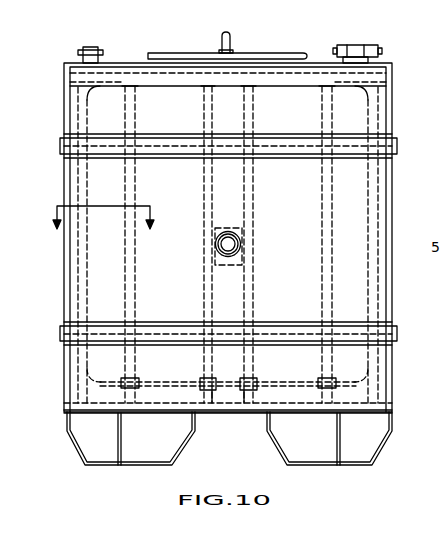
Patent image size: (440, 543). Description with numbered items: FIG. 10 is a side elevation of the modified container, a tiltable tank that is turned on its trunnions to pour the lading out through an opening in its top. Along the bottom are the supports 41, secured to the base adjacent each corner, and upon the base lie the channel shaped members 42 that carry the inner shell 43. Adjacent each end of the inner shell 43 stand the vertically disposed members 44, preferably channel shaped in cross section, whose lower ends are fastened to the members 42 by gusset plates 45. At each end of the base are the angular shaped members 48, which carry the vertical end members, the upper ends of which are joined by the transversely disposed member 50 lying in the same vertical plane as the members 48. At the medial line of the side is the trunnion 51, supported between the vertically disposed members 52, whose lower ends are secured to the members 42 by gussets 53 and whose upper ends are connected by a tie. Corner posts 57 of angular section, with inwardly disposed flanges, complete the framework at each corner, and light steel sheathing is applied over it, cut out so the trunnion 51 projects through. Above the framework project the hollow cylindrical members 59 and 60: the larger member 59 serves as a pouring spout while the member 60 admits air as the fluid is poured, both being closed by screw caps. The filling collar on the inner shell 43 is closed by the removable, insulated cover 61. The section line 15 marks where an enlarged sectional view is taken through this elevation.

The section line 15— 15 is at (101, 209).
The supports 41 is at (184, 446).
The channel shaped members 42 is at (344, 383).
The inner shell 43 is at (150, 383).
The vertically disposed members 44 is at (133, 248).
The gusset plates 45 is at (124, 381).
The angular shaped members 48 is at (66, 398).
The transversely disposed member 50 is at (68, 65).
The trunnions 51 is at (240, 246).
The members 52 is at (204, 187).
The gussets 53 is at (214, 383).
The corner posts 57 is at (72, 110).
The hollow cylindrical member 59 is at (358, 49).
The hollow cylindrical member 60 is at (100, 61).
The cover 61 is at (256, 54).